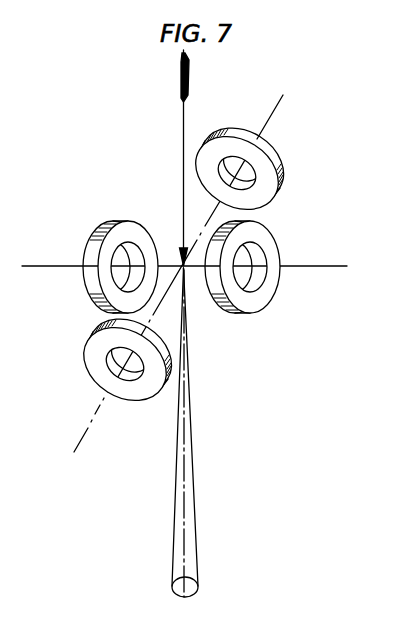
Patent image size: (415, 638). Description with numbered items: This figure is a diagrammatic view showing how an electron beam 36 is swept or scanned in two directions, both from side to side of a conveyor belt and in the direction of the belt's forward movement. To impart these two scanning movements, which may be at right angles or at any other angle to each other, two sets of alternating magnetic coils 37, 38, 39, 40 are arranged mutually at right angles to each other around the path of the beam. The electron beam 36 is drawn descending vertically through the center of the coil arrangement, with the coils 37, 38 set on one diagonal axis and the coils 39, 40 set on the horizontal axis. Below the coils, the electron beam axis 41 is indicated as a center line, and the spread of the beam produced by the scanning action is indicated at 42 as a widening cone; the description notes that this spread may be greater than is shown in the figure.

The electron beam 36 is at (183, 169).
The alternating magnetic coil 37 is at (105, 378).
The alternating magnetic coil 38 is at (270, 158).
The alternating magnetic coil 39 is at (120, 222).
The alternating magnetic coil 40 is at (268, 244).
The electron beam axis 41 is at (185, 557).
The spread of the electron beam 42 is at (195, 493).